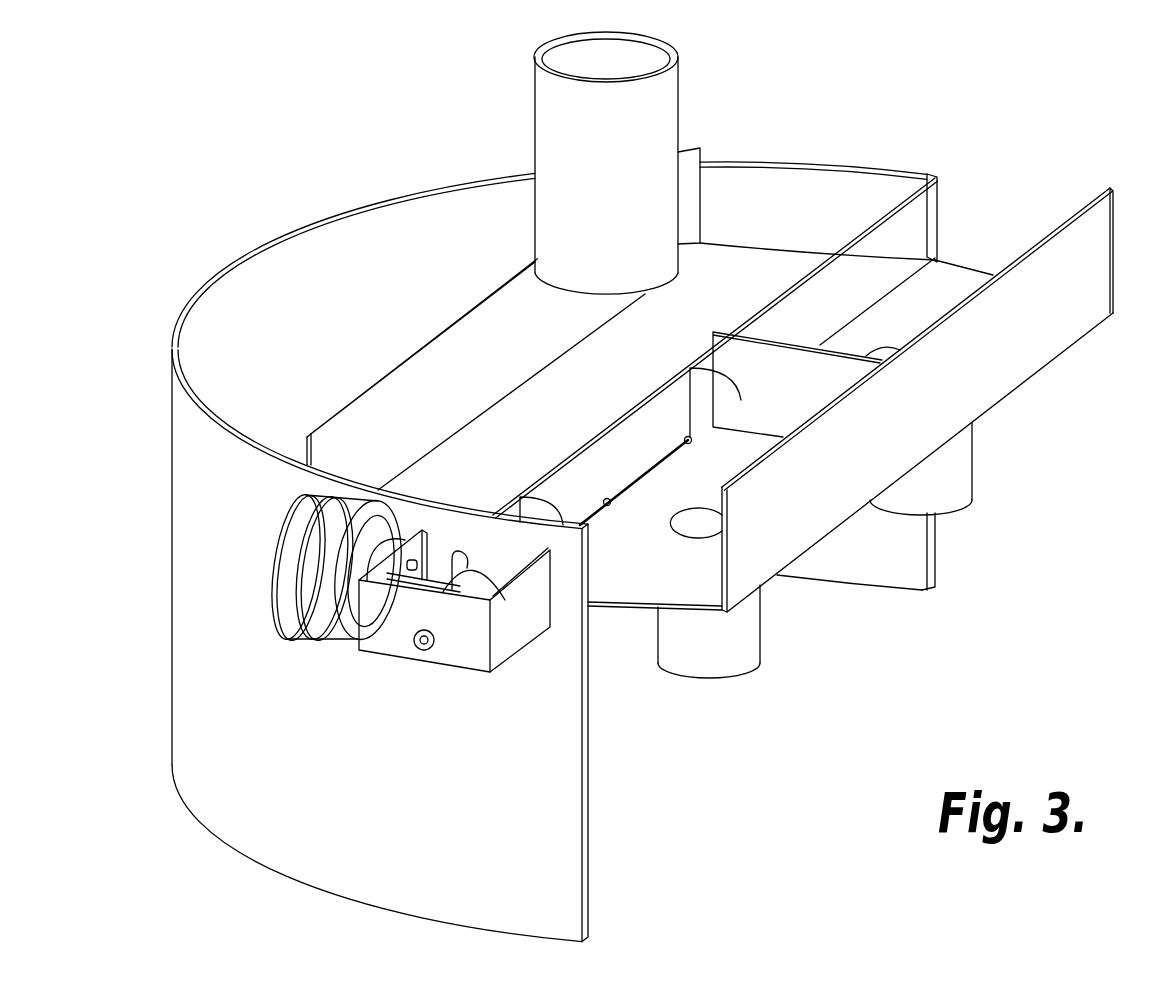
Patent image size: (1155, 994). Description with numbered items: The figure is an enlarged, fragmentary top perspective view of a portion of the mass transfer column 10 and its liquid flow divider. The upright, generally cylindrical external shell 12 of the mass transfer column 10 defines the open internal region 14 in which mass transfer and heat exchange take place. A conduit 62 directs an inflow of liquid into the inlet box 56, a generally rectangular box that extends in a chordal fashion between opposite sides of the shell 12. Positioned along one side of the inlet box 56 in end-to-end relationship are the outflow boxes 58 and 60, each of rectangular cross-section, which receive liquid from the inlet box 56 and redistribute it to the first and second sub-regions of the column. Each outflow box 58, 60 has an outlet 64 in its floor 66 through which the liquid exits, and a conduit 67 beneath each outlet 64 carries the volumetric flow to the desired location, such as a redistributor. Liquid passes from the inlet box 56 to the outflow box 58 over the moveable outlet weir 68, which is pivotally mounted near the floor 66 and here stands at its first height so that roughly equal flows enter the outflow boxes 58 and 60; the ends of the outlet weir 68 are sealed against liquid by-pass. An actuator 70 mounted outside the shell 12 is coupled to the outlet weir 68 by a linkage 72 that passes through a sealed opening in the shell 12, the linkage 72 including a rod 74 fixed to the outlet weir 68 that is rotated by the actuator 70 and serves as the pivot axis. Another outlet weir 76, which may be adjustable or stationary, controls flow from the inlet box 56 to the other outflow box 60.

The mass transfer column 10 is at (247, 247).
The external shell 12 is at (333, 215).
The open internal region 14 is at (427, 230).
The inlet box 56 is at (800, 197).
The outflow box 58 is at (674, 442).
The outflow box 60 is at (899, 252).
The conduit 62 is at (668, 95).
The outlet 64 is at (888, 357).
The floor 66 is at (635, 587).
The conduit 67 is at (953, 470).
The outlet weir 68 is at (602, 463).
The actuator 70 is at (290, 620).
The linkage 72 is at (438, 575).
The rod 74 is at (420, 648).
The outlet weir 76 is at (793, 303).